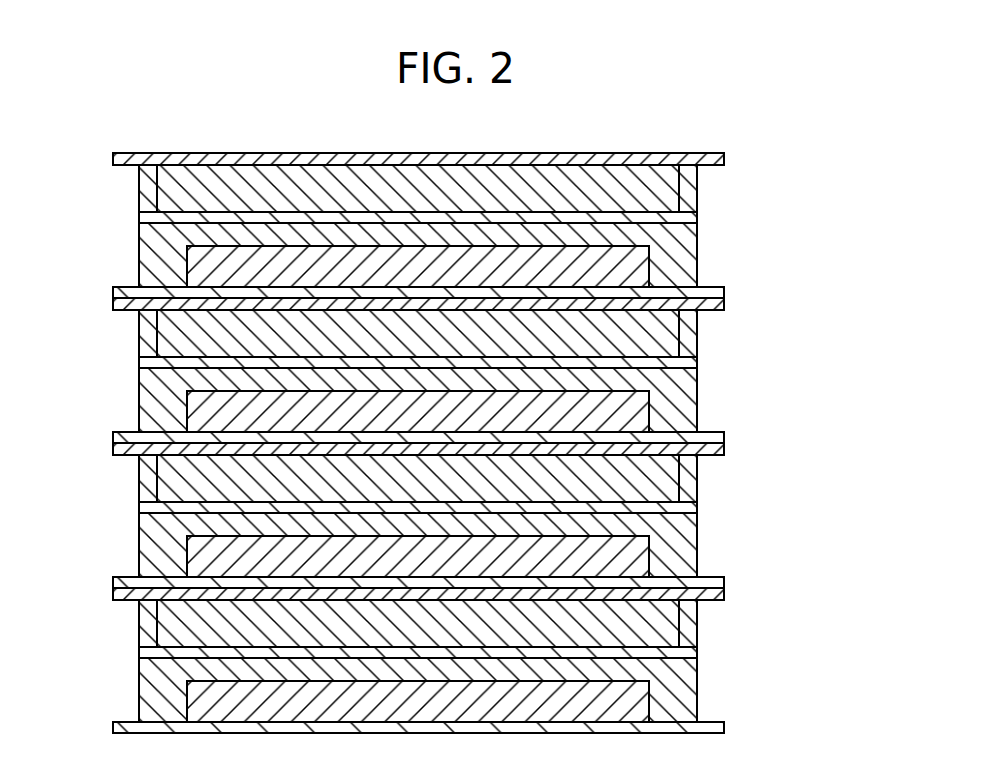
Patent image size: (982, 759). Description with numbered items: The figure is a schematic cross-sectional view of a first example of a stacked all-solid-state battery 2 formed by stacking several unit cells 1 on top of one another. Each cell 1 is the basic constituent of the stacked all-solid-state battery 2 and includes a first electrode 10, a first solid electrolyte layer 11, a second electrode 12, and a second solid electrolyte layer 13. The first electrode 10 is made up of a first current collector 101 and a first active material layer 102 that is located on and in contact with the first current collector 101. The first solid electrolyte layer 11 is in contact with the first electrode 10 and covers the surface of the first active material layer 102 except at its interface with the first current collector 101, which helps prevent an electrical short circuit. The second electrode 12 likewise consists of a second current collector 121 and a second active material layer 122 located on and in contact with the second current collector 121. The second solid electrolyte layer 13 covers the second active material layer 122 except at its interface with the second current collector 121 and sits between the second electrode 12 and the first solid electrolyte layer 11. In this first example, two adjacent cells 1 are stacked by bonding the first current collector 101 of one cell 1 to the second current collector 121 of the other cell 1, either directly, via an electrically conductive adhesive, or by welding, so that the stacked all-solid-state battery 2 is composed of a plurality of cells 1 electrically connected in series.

The cell 1 is at (92, 153).
The stacked all-solid-state battery 2 is at (55, 153).
The first electrode 10 is at (858, 141).
The first current collector 101 is at (713, 163).
The first active material layer 102 is at (660, 185).
The first solid electrolyte layer 11 is at (680, 207).
The second electrode 12 is at (858, 215).
The second current collector 121 is at (713, 292).
The second active material layer 122 is at (627, 275).
The second solid electrolyte layer 13 is at (680, 238).